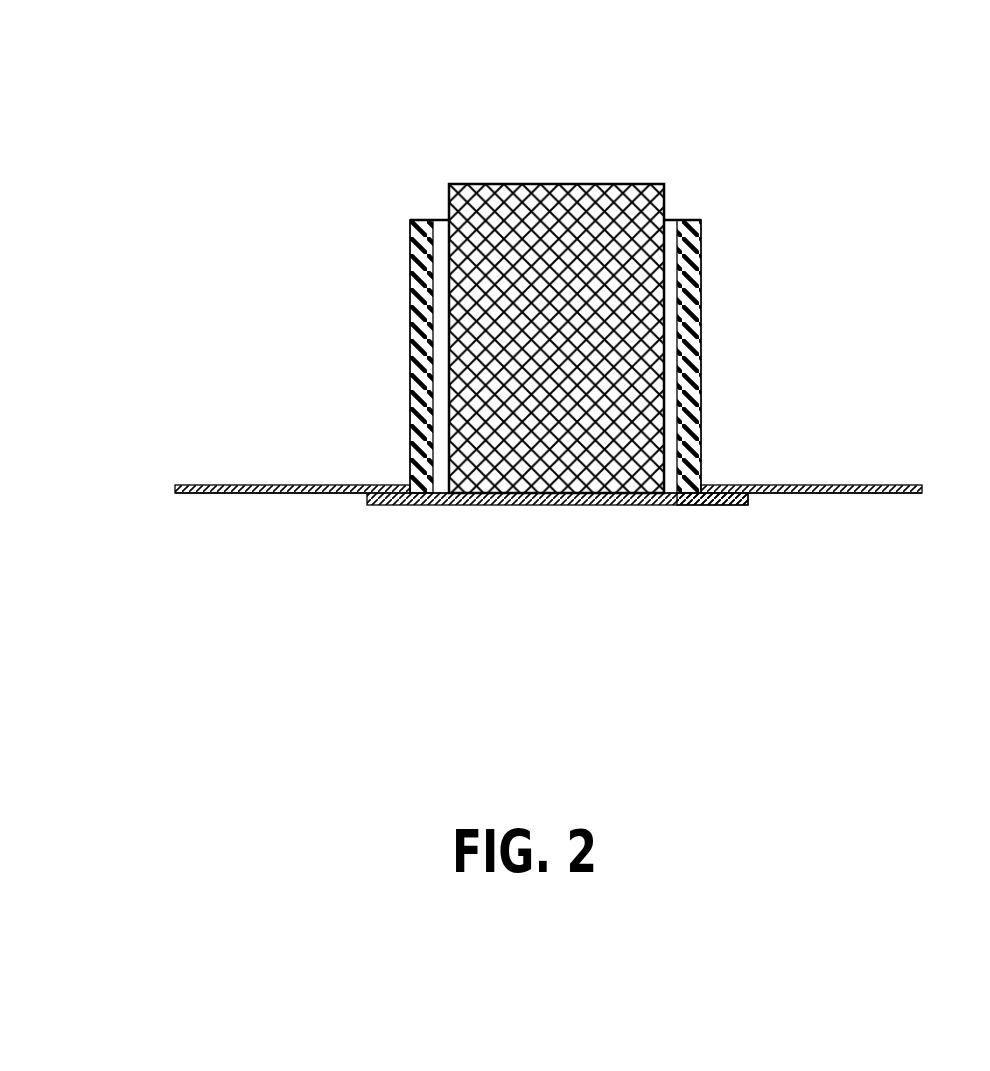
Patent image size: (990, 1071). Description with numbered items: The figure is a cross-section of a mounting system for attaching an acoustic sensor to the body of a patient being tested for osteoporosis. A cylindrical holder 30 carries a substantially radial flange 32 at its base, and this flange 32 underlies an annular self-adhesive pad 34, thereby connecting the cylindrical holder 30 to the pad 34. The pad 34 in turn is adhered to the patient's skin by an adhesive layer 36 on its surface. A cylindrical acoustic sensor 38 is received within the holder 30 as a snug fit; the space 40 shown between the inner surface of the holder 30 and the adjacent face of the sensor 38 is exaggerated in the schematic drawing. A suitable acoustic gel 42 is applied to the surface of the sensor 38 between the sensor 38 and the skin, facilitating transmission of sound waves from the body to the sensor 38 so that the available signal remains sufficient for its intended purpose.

The cylindrical holder 30 is at (703, 372).
The radial flange 32 is at (710, 500).
The annular self-adhesive pad 34 is at (785, 482).
The adhesive layer 36 is at (268, 498).
The acoustic sensor 38 is at (657, 183).
The space 40 is at (693, 217).
The acoustic gel 42 is at (510, 505).